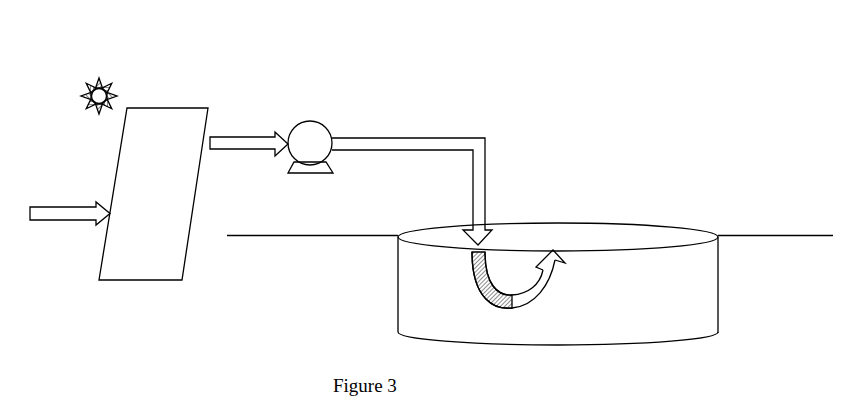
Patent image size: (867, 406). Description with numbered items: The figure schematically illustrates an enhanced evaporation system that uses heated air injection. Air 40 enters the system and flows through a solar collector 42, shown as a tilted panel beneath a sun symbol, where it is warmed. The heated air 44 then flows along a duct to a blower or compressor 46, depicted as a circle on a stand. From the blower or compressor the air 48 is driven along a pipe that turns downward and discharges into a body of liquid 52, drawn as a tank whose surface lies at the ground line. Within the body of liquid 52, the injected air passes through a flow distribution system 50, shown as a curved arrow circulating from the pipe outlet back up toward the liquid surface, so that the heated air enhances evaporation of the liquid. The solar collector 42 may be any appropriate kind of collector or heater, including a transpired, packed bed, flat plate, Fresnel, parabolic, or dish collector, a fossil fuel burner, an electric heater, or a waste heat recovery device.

The air 40 is at (63, 207).
The solar collector 42 is at (155, 148).
The heated air 44 is at (237, 137).
The blower or compressor 46 is at (308, 142).
The air 48 is at (401, 137).
The flow distribution system 50 is at (518, 279).
The body of liquid 52 is at (690, 298).